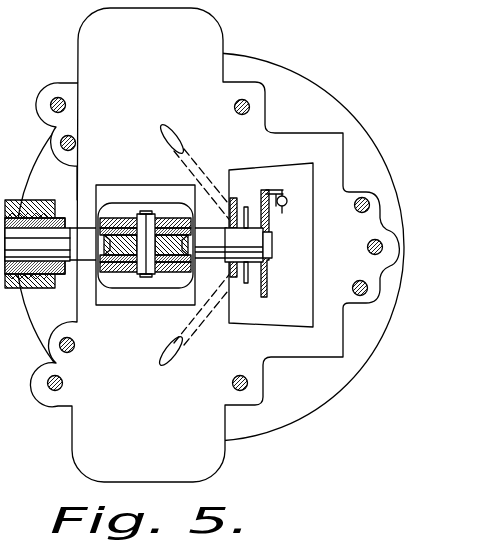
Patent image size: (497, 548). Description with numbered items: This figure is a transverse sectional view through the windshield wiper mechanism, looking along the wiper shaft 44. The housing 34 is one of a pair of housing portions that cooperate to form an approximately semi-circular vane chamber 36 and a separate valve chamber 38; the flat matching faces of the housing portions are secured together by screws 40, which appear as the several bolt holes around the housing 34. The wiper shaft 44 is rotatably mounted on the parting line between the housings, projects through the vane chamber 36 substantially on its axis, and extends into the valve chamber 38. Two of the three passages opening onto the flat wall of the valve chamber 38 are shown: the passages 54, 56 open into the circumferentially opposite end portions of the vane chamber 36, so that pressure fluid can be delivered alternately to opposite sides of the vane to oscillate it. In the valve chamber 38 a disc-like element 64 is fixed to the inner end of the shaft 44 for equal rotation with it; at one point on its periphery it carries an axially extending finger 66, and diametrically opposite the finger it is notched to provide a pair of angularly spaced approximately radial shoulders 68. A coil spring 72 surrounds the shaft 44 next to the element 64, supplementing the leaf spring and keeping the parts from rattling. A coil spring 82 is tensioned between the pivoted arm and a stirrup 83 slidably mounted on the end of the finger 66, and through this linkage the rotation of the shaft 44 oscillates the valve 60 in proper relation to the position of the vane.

The housing 34 is at (99, 37).
The vane chamber 36 is at (124, 191).
The valve chamber 38 is at (308, 246).
The screws 40 is at (60, 143).
The wiper shaft 44 is at (37, 244).
The passage 54 is at (177, 130).
The passage 56 is at (167, 364).
The valve 60 is at (233, 282).
The disc-like element 64 is at (268, 266).
The finger 66 is at (270, 190).
The shoulders 68 is at (268, 294).
The coil spring 72 is at (247, 207).
The coil spring 82 is at (287, 201).
The stirrup 83 is at (271, 224).